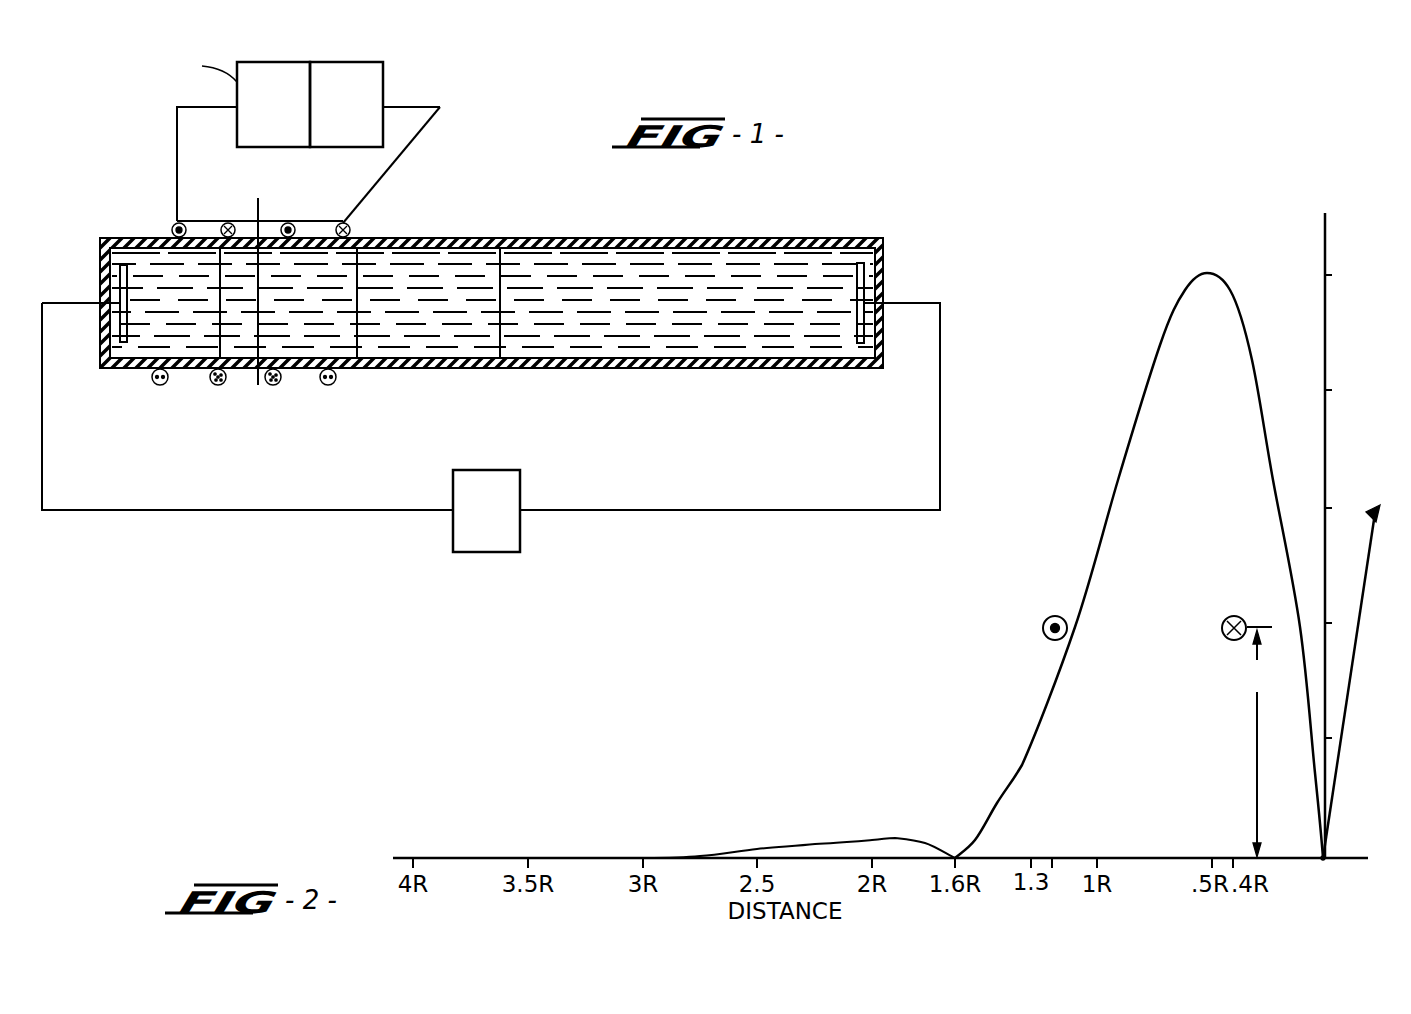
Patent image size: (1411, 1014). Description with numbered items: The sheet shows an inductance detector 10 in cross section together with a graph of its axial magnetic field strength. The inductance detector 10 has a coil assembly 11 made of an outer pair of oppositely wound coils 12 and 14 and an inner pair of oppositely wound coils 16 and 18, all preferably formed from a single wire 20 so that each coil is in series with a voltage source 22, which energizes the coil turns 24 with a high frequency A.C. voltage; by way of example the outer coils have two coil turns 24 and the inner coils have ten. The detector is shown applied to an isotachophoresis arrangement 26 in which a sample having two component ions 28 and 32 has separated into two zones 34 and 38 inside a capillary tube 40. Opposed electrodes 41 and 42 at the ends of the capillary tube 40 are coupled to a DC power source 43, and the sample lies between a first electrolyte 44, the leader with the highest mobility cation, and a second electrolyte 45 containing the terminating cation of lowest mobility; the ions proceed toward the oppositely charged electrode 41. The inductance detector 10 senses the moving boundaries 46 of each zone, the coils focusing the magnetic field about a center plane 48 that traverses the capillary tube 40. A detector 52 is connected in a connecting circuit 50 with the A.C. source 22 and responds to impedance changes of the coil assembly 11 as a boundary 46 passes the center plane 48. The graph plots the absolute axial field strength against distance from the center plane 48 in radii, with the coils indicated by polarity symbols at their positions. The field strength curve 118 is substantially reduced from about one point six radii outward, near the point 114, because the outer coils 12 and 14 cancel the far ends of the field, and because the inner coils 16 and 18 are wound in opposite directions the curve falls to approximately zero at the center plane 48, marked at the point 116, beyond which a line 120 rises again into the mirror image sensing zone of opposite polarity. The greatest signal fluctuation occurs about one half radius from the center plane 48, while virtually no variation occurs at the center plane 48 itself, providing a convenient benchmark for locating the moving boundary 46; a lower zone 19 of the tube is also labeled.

In FIG. 1, the inductance detector 10 is at (110, 212).
In FIG. 1, the coil assembly 11 is at (228, 392).
In FIG. 1, the outer coil 12 is at (174, 222).
In FIG. 1, the outer coil 14 is at (351, 228).
In FIG. 1, the inner coil 16 is at (221, 222).
In FIG. 1, the inner coil 18 is at (289, 222).
In FIG. 1, the lower zone 19 is at (239, 306).
In FIG. 1, the single wire 20 is at (178, 162).
In FIG. 1, the voltage source 22 is at (267, 62).
In FIG. 1, the coil turns 24 is at (160, 387).
In FIG. 1, the isotachophoresis arrangement 26 is at (641, 232).
In FIG. 1, the component ion 28 is at (307, 306).
In FIG. 1, the component ion 32 is at (428, 306).
In FIG. 1, the zone 34 is at (321, 303).
In FIG. 1, the zone 38 is at (448, 303).
In FIG. 1, the capillary tube 40 is at (540, 240).
In FIG. 1, the electrode 41 is at (128, 292).
In FIG. 1, the electrode 42 is at (857, 323).
In FIG. 1, the DC power source 43 is at (483, 470).
In FIG. 1, the first electrolyte 44 is at (194, 303).
In FIG. 1, the second electrolyte 45 is at (492, 300).
In FIG. 1, the moving boundary 46 is at (220, 340).
In FIG. 1, the center plane 48 is at (258, 393).
In FIG. 2, the center plane 48 is at (1325, 352).
In FIG. 1, the connecting circuit 50 is at (403, 152).
In FIG. 1, the detector 52 is at (345, 62).
In FIG. 2, the curve minimum point 114 is at (955, 842).
In FIG. 2, the curve zero point 116 is at (1336, 866).
In FIG. 2, the field intensity curve 118 is at (1139, 565).
In FIG. 2, the rising line segment 120 is at (1355, 681).